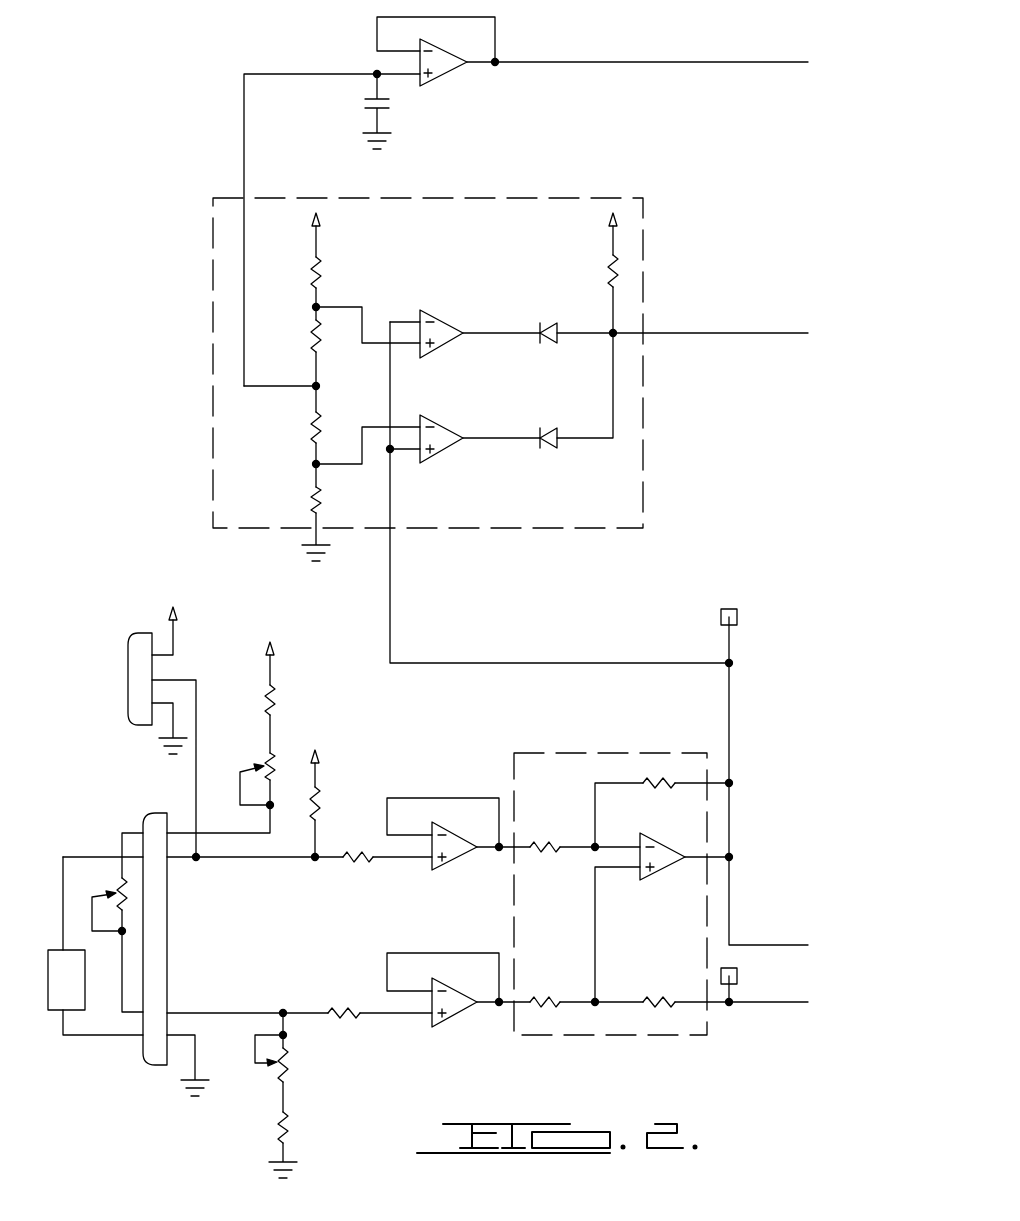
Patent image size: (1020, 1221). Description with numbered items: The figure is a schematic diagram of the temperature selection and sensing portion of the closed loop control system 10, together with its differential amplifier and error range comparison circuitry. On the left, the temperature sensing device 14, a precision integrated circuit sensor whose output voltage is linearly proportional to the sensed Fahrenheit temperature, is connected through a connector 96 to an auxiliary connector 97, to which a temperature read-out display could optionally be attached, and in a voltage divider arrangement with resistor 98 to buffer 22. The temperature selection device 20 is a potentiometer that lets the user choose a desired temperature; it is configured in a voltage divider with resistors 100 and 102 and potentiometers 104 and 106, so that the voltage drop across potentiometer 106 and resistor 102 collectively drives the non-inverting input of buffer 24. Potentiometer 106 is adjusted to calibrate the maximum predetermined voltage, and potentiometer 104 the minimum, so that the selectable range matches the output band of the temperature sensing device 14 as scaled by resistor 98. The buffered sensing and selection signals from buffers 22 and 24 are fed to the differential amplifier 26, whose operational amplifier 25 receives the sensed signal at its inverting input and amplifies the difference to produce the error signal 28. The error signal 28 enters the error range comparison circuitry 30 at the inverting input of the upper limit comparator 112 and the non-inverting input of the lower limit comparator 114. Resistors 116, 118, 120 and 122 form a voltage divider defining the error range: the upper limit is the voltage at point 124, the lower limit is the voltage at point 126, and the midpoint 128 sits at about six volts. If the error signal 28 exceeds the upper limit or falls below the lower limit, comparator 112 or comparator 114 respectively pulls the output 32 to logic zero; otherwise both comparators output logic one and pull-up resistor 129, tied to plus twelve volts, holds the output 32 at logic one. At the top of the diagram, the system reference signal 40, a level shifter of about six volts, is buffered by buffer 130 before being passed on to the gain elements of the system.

The closed loop control system 10 is at (160, 440).
The temperature sensing device 14 is at (55, 1012).
The temperature selection device 20 is at (118, 878).
The buffer 22 is at (455, 851).
The buffer 24 is at (455, 1020).
The operational amplifier 25 is at (665, 862).
The differential amplifier 26 is at (663, 1040).
The error signal 28 is at (392, 500).
The error range comparison circuitry 30 is at (583, 198).
The output 32 is at (718, 333).
The system reference signal 40 is at (244, 113).
The connector 96 is at (158, 922).
The auxiliary connector 97 is at (140, 643).
The resistor 98 is at (317, 800).
The resistor 100 is at (272, 693).
The resistor 102 is at (287, 1125).
The potentiometer 104 is at (262, 762).
The potentiometer 106 is at (287, 1060).
The upper limit comparator 112 is at (447, 325).
The lower limit comparator 114 is at (447, 428).
The resistor 116 is at (318, 275).
The resistor 118 is at (314, 345).
The resistor 120 is at (314, 440).
The resistor 122 is at (318, 493).
The point 124 is at (316, 307).
The point 126 is at (314, 465).
The midpoint 128 is at (318, 386).
The pull-up resistor 129 is at (611, 267).
The buffer 130 is at (447, 67).